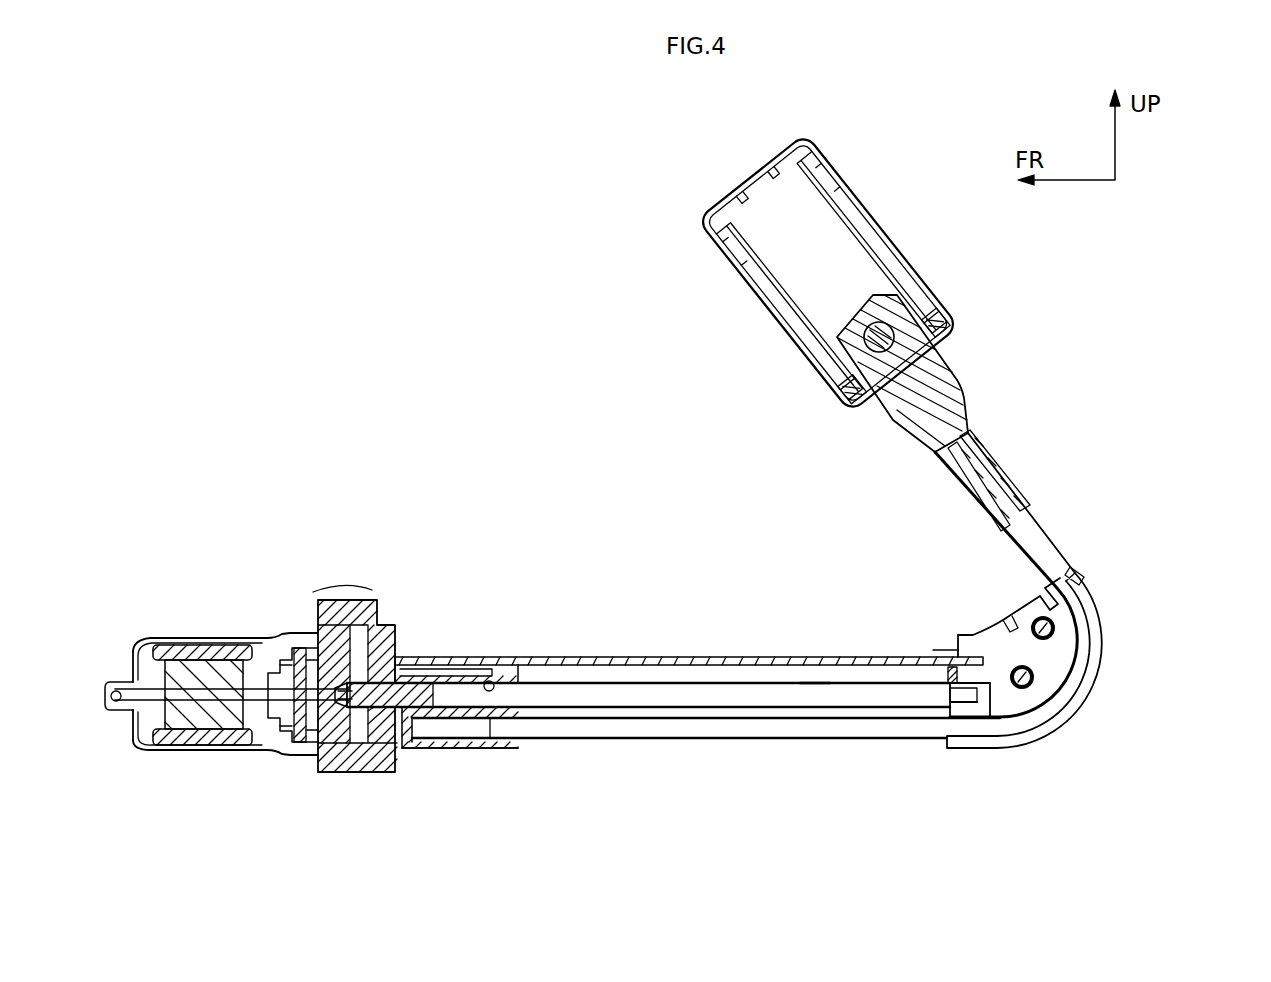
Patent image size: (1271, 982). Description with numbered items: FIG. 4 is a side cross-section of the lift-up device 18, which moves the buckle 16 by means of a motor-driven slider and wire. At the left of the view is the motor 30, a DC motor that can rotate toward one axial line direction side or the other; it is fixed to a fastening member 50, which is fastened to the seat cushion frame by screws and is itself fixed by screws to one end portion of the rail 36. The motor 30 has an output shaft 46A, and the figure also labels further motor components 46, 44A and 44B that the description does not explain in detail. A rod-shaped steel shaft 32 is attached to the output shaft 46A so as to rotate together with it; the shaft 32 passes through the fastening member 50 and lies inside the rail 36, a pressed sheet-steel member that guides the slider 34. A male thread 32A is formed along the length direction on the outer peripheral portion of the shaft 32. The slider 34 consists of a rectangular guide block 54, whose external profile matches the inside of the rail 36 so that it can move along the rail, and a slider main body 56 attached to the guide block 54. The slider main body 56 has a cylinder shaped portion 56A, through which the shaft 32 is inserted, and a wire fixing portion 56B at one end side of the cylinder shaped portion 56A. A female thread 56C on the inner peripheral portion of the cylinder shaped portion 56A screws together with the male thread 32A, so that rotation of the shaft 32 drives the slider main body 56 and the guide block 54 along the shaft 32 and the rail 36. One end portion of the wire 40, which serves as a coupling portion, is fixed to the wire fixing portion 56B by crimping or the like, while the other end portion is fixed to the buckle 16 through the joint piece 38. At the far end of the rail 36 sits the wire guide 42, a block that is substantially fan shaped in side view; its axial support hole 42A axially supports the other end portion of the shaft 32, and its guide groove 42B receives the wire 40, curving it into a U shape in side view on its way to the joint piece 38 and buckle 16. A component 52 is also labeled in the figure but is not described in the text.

The buckle 16 is at (857, 173).
The lift-up device 18 is at (498, 348).
The motor 30 is at (222, 608).
The shaft 32 is at (688, 684).
The male thread 32A is at (810, 681).
The slider 34 is at (488, 758).
The rail 36 is at (638, 657).
The joint piece 38 is at (963, 406).
The wire 40 is at (1050, 533).
The wire guide 42 is at (1099, 680).
The axial support hole 42A is at (985, 699).
The guide groove 42B is at (1088, 617).
The housing inner member 44A is at (203, 747).
The housing outer case 44B is at (137, 752).
The spring 46 is at (249, 671).
The output shaft 46A is at (262, 716).
The fastening member 50 is at (370, 773).
The connecting portion 52 is at (931, 652).
The guide block 54 is at (437, 750).
The slider main body 56 is at (511, 688).
The cylinder shaped portion 56A is at (455, 658).
The wire fixing portion 56B is at (522, 746).
The female thread 56C is at (492, 680).